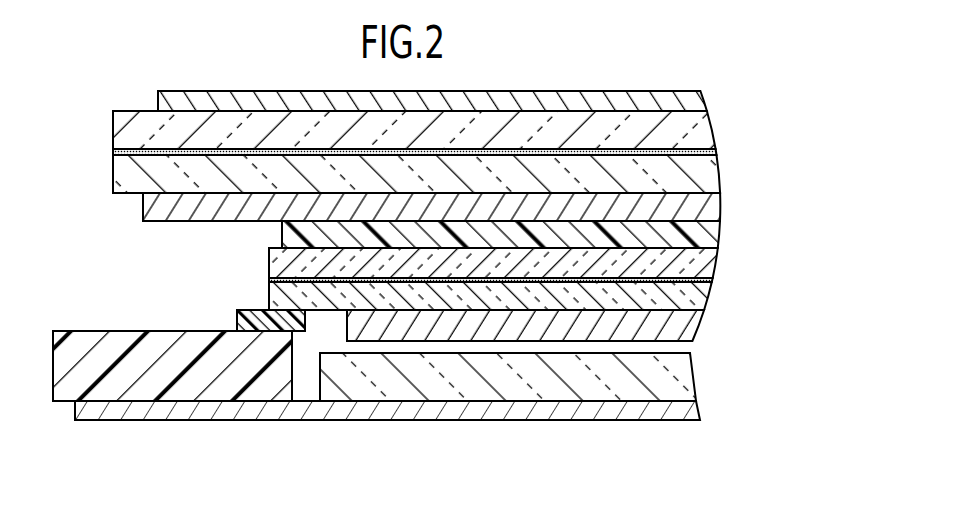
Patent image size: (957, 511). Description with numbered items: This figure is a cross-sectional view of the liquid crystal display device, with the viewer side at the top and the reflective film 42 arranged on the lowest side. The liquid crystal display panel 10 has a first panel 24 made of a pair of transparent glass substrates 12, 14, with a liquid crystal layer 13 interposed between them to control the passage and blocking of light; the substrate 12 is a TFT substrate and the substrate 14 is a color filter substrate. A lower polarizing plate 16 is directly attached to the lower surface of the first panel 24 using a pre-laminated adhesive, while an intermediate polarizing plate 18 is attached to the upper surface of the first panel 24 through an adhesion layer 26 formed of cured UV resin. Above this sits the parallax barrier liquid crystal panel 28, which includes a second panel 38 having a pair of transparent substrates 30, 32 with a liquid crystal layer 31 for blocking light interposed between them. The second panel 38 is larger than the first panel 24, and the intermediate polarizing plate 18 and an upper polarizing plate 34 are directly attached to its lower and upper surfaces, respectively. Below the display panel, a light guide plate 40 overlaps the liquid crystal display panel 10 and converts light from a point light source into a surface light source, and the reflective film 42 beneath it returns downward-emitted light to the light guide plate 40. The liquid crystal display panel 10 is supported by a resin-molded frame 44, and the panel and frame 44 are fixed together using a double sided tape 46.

The liquid crystal display panel 10 is at (509, 270).
The substrate 12 is at (521, 302).
The liquid crystal layer 13 is at (692, 280).
The substrate 14 is at (701, 262).
The lower polarizing plate 16 is at (583, 328).
The intermediate polarizing plate 18 is at (703, 207).
The first panel 24 is at (544, 283).
The adhesion layer 26 is at (701, 233).
The parallax barrier liquid crystal panel 28 is at (489, 147).
The substrate 30 is at (443, 174).
The liquid crystal layer 31 is at (712, 152).
The substrate 32 is at (705, 131).
The upper polarizing plate 34 is at (703, 101).
The second panel 38 is at (466, 152).
The light guide plate 40 is at (512, 390).
The reflective film 42 is at (410, 408).
The frame 44 is at (222, 388).
The double sided tape 46 is at (283, 320).